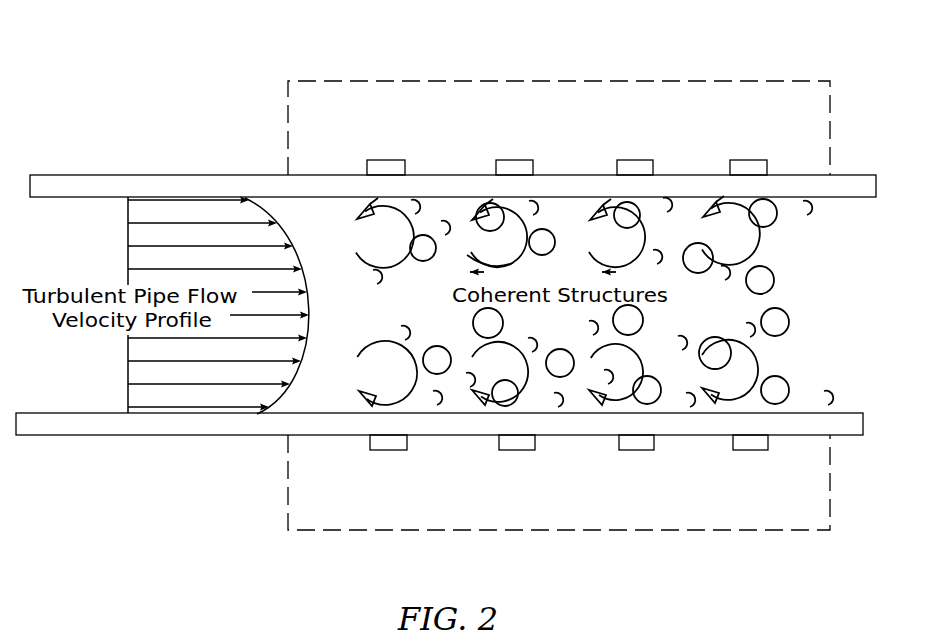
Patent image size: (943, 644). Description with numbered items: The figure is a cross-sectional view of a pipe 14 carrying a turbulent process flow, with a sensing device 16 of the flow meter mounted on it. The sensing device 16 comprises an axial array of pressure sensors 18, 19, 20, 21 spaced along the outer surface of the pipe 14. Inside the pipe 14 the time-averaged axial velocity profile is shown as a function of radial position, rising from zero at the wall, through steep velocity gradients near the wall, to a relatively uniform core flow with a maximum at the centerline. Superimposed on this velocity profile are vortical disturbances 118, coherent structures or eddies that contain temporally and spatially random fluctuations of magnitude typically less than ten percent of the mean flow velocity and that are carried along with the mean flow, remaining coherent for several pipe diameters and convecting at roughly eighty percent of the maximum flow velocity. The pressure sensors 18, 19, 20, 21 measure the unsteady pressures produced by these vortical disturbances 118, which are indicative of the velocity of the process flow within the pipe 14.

The pipe 14 is at (841, 175).
The sensing device 16 is at (606, 80).
The pressure sensor 18 is at (385, 160).
The pressure sensor 19 is at (515, 160).
The pressure sensor 20 is at (632, 160).
The pressure sensor 21 is at (747, 160).
The vortical disturbances 118 is at (757, 238).